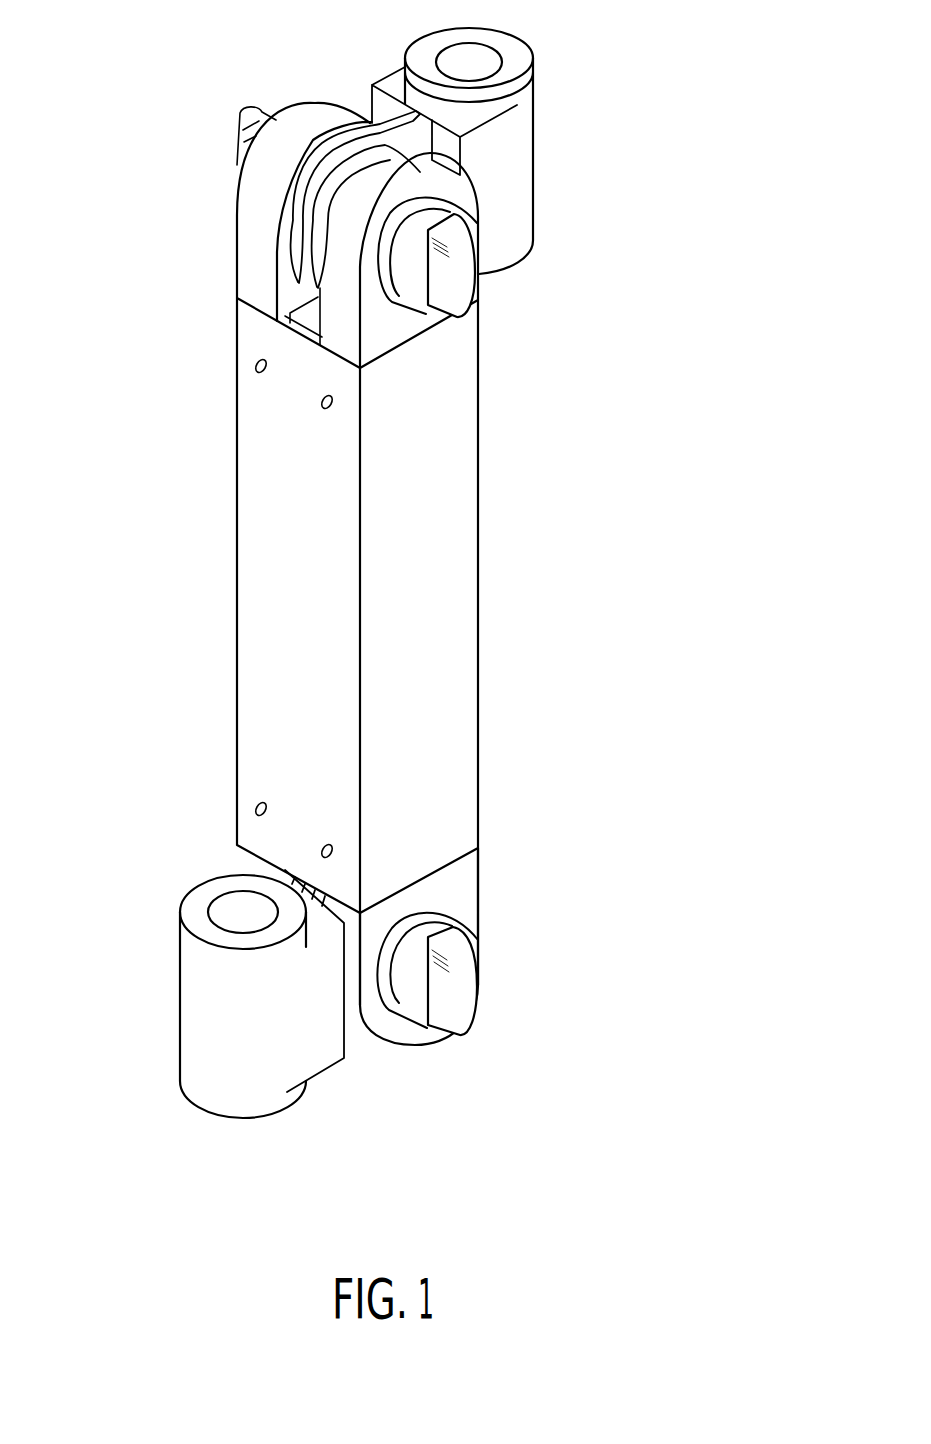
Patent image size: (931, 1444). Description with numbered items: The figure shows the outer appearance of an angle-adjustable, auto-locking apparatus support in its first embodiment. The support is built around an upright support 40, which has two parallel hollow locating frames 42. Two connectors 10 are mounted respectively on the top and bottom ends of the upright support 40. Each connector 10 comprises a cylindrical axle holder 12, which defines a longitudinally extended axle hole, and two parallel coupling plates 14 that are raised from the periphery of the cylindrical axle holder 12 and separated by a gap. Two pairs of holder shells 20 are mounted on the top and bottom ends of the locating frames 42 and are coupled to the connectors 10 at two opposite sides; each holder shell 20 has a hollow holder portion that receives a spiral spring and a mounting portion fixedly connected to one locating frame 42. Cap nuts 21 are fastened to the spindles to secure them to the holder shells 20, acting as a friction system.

The connectors 10 is at (590, 114).
The cylindrical axle holder 12 is at (512, 177).
The coupling plates 14 is at (370, 122).
The holder shells 20 is at (262, 223).
The cap nuts 21 is at (462, 275).
The upright support 40 is at (248, 532).
The locating frames 42 is at (438, 583).